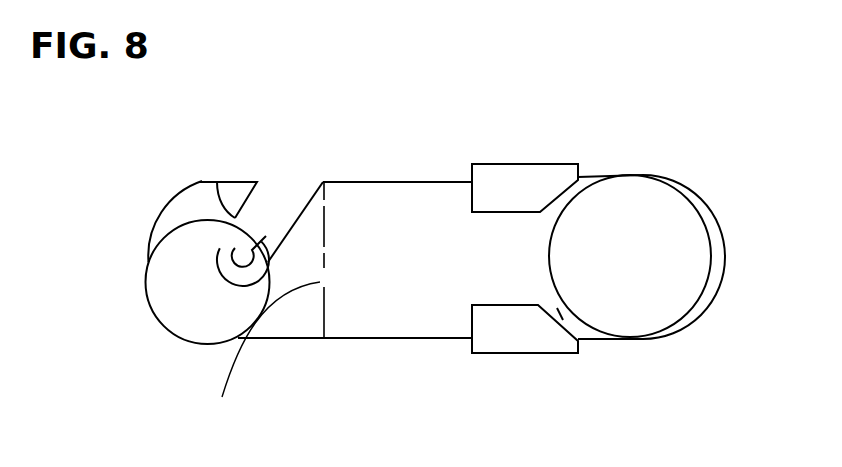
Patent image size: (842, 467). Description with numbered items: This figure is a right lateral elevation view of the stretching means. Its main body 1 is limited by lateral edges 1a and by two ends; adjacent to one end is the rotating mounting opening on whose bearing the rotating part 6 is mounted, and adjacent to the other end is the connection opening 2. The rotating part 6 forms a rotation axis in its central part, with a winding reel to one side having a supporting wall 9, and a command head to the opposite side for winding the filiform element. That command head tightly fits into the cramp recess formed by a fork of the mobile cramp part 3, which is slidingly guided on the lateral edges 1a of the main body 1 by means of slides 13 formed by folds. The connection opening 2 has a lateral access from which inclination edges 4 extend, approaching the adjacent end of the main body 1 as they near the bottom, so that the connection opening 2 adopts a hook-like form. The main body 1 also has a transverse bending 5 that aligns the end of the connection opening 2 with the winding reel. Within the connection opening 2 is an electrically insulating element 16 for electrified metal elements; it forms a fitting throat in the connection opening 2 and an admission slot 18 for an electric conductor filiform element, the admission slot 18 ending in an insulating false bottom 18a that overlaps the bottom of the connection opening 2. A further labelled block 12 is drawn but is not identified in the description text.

The main body 1 is at (312, 352).
The lateral edges 1a is at (397, 180).
The connection opening 2 is at (300, 197).
The mobile cramp part 3 is at (575, 328).
The inclination edges 4 is at (219, 181).
The transverse bending 5 is at (260, 350).
The rotating part 6 is at (633, 165).
The supporting wall 9 is at (676, 237).
The upper clamp block 12 is at (524, 160).
The slides 13 is at (503, 241).
The electrically insulating element 16 is at (160, 342).
The admission slot 18 is at (274, 159).
The insulating false bottom 18a is at (259, 252).